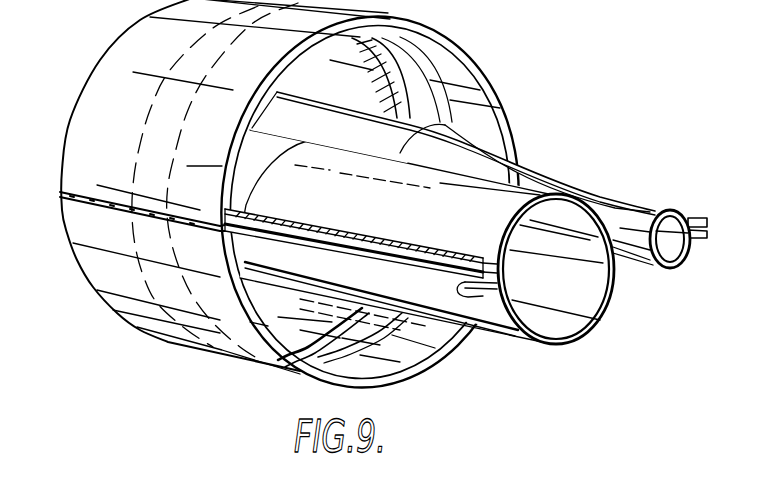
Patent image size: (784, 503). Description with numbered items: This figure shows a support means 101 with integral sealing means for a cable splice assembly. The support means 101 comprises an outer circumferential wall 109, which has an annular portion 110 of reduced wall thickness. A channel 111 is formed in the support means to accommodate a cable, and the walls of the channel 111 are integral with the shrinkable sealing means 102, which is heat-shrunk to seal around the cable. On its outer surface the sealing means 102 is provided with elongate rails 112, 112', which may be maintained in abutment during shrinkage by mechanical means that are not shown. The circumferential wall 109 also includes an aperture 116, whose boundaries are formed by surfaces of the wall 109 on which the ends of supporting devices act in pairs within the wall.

The support means 101 is at (370, 202).
The heat-shrunk sealing means 102 is at (595, 326).
The outer circumferential wall 109 is at (300, 202).
The annular portion of reduced wall thickness 110 is at (148, 183).
The channel 111 is at (262, 165).
The elongate rail 112 is at (466, 185).
The elongate rail 112' is at (587, 263).
The aperture 116 is at (190, 227).